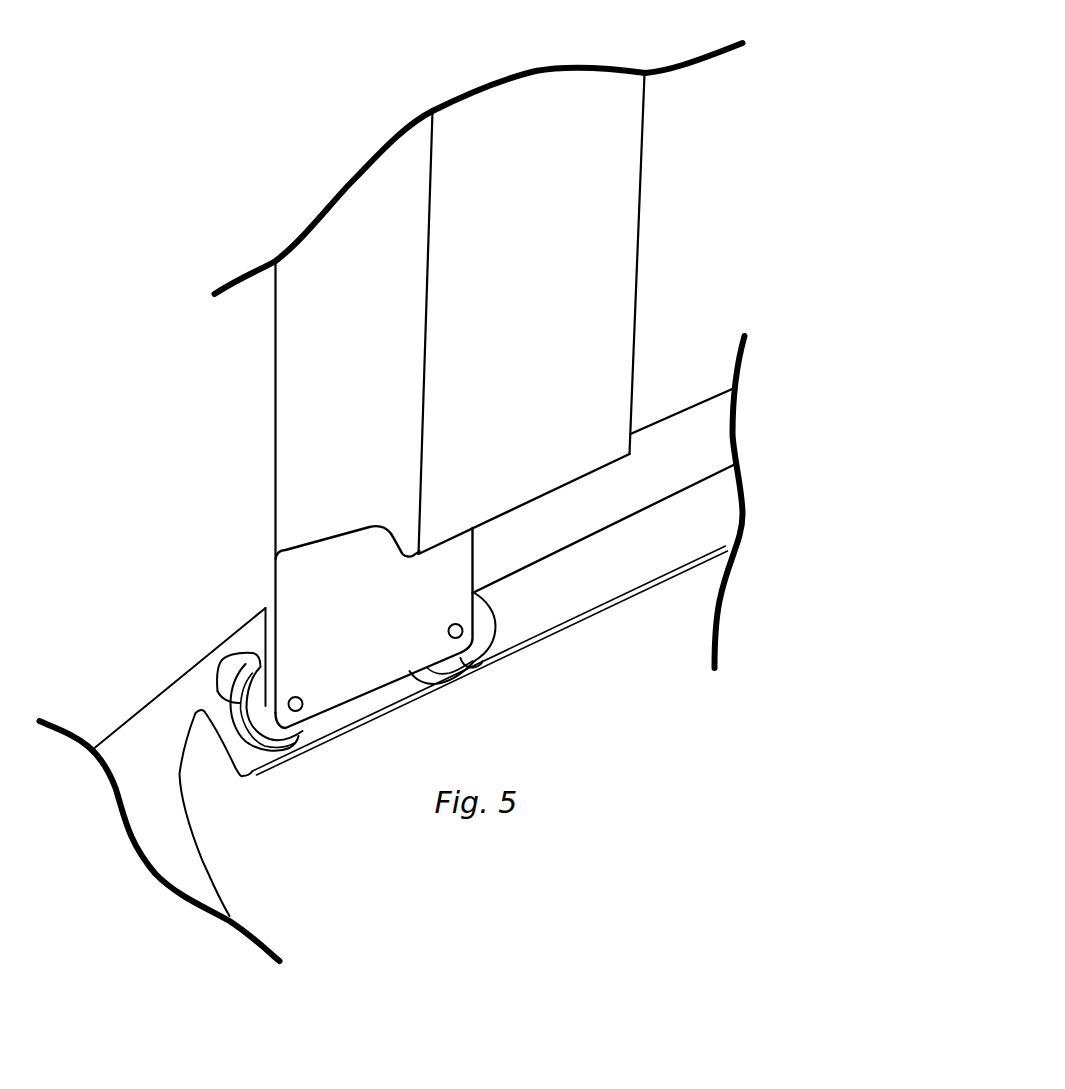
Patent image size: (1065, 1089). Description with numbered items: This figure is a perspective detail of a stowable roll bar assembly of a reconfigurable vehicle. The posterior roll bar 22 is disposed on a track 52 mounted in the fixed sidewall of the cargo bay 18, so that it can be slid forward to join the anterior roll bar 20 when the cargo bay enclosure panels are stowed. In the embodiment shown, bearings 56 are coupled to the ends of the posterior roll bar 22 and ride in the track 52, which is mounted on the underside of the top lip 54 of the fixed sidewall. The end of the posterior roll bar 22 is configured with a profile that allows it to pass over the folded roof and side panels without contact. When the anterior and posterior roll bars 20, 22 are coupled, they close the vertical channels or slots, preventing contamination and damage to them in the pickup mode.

The cargo bay 18 is at (147, 843).
The anterior roll bar 20 is at (392, 502).
The posterior roll bar 22 is at (578, 360).
The track 52 is at (555, 608).
The top lip 54 is at (247, 637).
The bearings 56 is at (298, 733).